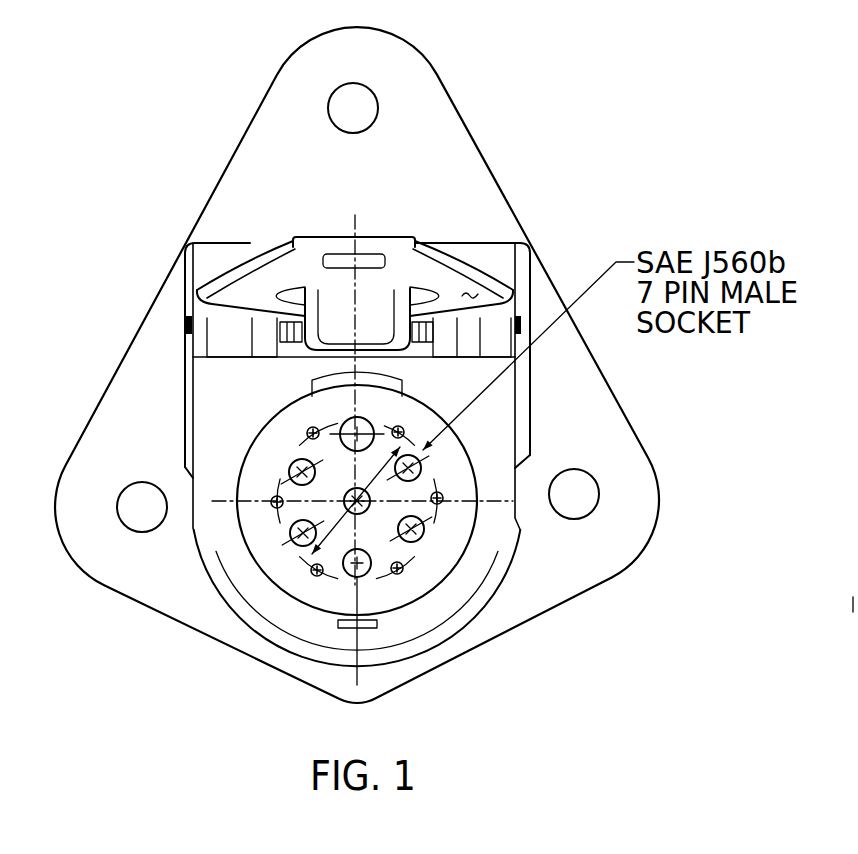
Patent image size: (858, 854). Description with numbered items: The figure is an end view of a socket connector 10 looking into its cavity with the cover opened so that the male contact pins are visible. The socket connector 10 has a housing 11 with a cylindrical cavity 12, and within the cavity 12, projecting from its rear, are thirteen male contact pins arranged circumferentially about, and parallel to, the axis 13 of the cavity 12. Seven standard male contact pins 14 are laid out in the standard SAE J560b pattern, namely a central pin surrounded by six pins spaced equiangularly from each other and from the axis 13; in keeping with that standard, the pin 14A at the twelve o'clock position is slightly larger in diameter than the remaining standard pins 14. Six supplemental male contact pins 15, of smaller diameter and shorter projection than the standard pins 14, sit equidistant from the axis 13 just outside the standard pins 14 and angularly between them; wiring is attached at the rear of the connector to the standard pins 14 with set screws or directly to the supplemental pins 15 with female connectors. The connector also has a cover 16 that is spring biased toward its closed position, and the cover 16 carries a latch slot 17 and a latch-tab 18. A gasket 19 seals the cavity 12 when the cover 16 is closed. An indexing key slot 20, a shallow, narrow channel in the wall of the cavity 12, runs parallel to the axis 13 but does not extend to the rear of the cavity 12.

The socket connector 10 is at (583, 593).
The housing 11 is at (533, 412).
The cylindrical cavity 12 is at (242, 485).
The axis 13 is at (436, 520).
The standard male contact pins 14 is at (420, 462).
The pin 14A is at (344, 424).
The supplemental male contact pins 15 is at (307, 430).
The cover 16 is at (266, 266).
The latch slot 17 is at (399, 270).
The latch-tab 18 is at (332, 300).
The gasket 19 is at (500, 293).
The indexing key slot 20 is at (380, 374).